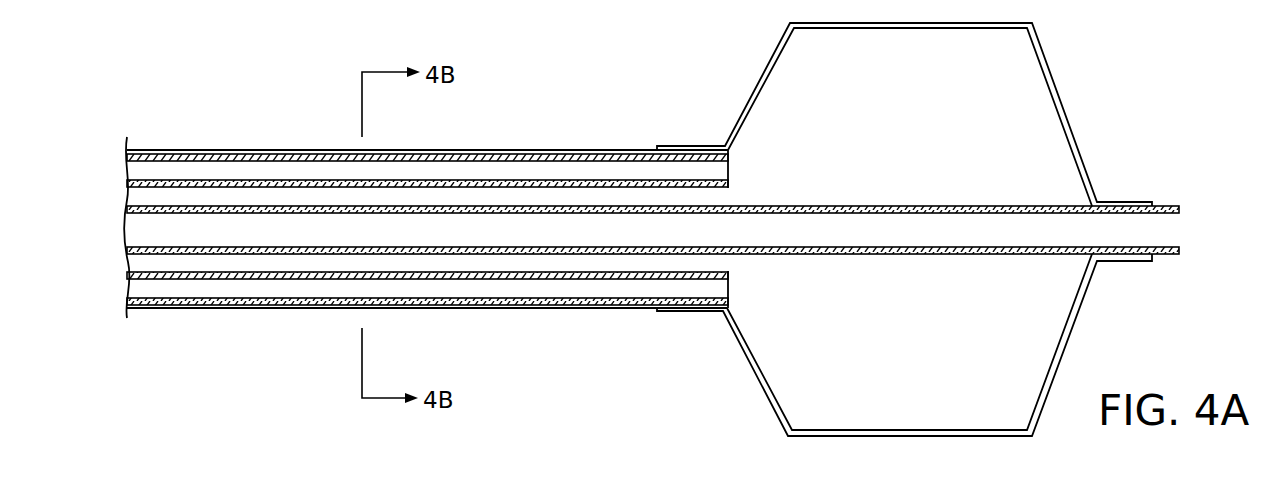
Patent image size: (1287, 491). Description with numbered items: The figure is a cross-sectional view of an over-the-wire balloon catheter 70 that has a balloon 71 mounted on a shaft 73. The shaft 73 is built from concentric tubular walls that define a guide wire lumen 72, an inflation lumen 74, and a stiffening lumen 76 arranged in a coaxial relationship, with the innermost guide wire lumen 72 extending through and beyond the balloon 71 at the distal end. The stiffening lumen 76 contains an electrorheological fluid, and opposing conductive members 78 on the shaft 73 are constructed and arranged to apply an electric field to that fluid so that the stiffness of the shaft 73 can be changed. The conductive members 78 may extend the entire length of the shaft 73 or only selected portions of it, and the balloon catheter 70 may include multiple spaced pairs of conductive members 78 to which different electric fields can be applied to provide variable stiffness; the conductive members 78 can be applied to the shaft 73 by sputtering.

The balloon catheter 70 is at (1132, 96).
The balloon 71 is at (1065, 110).
The guide wire lumen 72 is at (1165, 232).
The shaft 73 is at (308, 303).
The inflation lumen 74 is at (717, 263).
The stiffening lumen 76 is at (565, 168).
The conductive members 78 is at (190, 150).